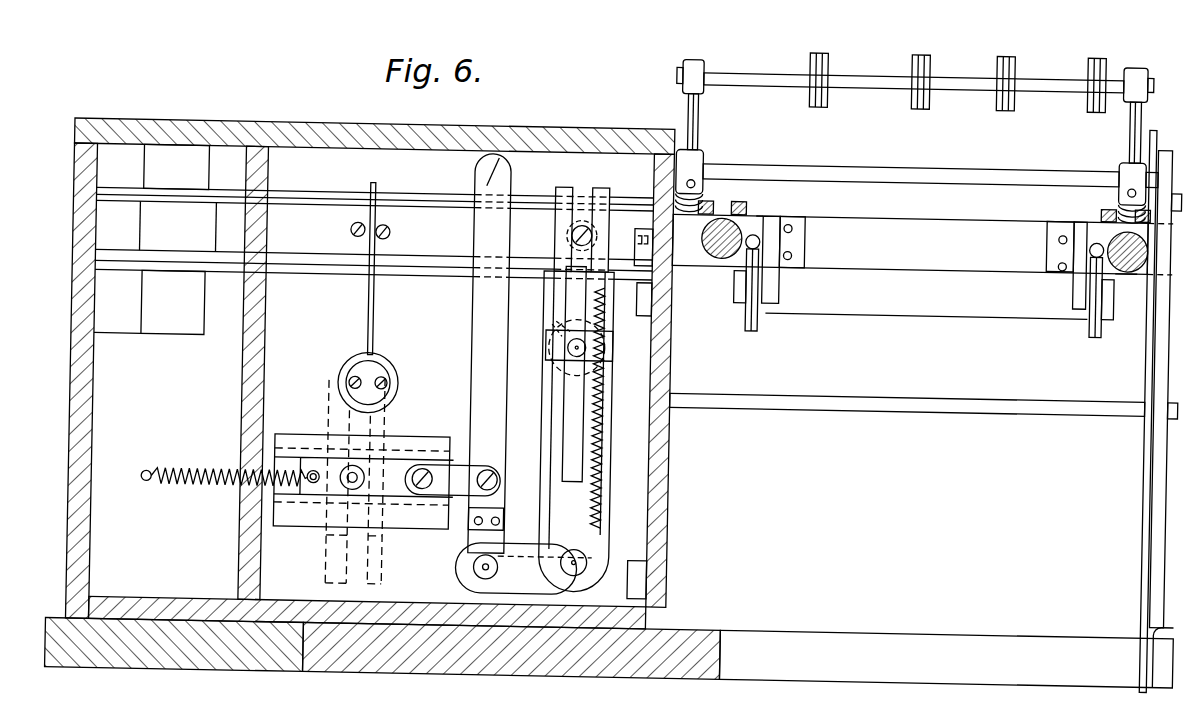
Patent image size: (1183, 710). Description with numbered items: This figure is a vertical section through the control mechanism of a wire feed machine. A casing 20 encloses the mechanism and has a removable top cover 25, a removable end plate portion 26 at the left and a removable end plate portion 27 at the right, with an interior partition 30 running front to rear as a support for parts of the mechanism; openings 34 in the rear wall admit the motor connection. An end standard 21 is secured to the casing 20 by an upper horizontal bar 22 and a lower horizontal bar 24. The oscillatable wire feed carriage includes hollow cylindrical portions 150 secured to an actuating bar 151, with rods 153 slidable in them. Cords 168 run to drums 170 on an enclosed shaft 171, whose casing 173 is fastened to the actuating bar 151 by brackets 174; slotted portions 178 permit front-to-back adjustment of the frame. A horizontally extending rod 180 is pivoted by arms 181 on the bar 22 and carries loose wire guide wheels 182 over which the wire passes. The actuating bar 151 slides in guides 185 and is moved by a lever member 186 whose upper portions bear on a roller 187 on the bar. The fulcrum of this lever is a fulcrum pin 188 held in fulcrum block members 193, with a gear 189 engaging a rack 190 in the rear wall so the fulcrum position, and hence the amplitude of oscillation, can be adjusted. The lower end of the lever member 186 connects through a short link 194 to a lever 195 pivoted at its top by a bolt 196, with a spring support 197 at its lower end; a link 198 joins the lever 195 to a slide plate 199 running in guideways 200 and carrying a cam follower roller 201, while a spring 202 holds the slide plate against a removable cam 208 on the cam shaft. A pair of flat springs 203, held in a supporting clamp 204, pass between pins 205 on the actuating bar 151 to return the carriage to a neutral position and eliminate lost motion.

The casing 20 is at (305, 668).
The end standard 21 is at (1148, 530).
The upper horizontal bar 22 is at (990, 152).
The lower horizontal bar 24 is at (1001, 398).
The removable top cover 25 is at (283, 118).
The removable end plate portion 26 is at (78, 313).
The removable end plate portion 27 is at (678, 370).
The interior partition 30 is at (270, 332).
The openings 34 is at (156, 238).
The hollow cylindrical portions 150 is at (762, 208).
The actuating bar 151 is at (424, 250).
The rods 153 is at (722, 246).
The cords 168 is at (792, 230).
The drums 170 is at (758, 316).
The enclosed shaft 171 is at (1108, 300).
The casing 173 is at (925, 302).
The brackets 174 is at (780, 280).
The slotted portions 178 is at (740, 189).
The horizontally extending rod 180 is at (735, 61).
The arms 181 is at (686, 90).
The wire guide wheels 182 is at (915, 40).
The guides 185 is at (337, 194).
The lever member 186 is at (600, 180).
The roller 187 is at (574, 226).
The fulcrum pin 188 is at (574, 342).
The gear 189 is at (556, 320).
The rack 190 is at (610, 432).
The fulcrum block members 193 is at (560, 336).
The short link 194 is at (545, 552).
The lever 195 is at (493, 394).
The bolt 196 is at (492, 145).
The spring support 197 is at (478, 575).
The link 198 is at (470, 515).
The slide plate 199 is at (396, 450).
The guideways 200 is at (292, 522).
The cam follower roller 201 is at (352, 462).
The spring 202 is at (209, 484).
The flat springs 203 is at (379, 322).
The supporting clamp 204 is at (392, 368).
The pins 205 is at (393, 225).
The removable cam 208 is at (392, 554).